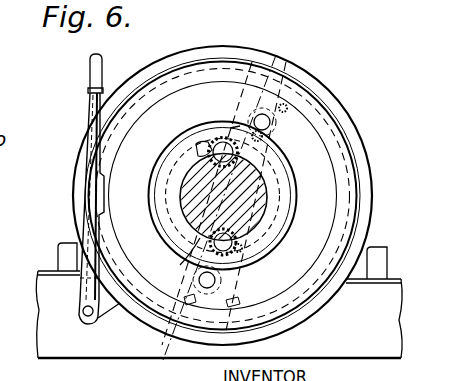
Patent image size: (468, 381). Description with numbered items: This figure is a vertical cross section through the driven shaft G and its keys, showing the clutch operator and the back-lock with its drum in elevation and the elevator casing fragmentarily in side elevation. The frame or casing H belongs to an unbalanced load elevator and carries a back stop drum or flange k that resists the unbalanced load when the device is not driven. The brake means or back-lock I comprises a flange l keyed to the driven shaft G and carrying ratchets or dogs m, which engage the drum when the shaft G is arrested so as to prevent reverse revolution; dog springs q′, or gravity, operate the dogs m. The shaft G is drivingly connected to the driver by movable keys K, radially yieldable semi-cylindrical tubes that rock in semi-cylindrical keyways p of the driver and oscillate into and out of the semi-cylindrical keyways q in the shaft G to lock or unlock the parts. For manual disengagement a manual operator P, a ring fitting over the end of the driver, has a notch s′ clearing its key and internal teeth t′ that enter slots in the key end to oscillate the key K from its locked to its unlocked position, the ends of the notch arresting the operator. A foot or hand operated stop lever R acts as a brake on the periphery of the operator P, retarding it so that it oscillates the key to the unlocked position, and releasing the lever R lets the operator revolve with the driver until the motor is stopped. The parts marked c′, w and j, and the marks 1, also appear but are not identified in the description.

The stop lever R is at (88, 107).
The frame or casing H is at (392, 298).
The brake means or back-lock I is at (357, 133).
The back stop drum or flange k is at (357, 160).
The flange l is at (355, 190).
The ratchets or dogs m is at (284, 78).
The manual operator P is at (223, 196).
The semi-cylindrical keyways p is at (262, 152).
The semi-cylindrical keyways q is at (195, 168).
The dog springs q′ is at (298, 100).
The driven shaft G is at (290, 190).
The pinions c′ is at (217, 197).
The connecting rod w is at (262, 270).
The rollers j is at (236, 117).
The internal teeth t′ is at (198, 133).
The notch s′ is at (180, 153).
The movable keys K is at (200, 238).
The section line 1- 1 is at (292, 40).